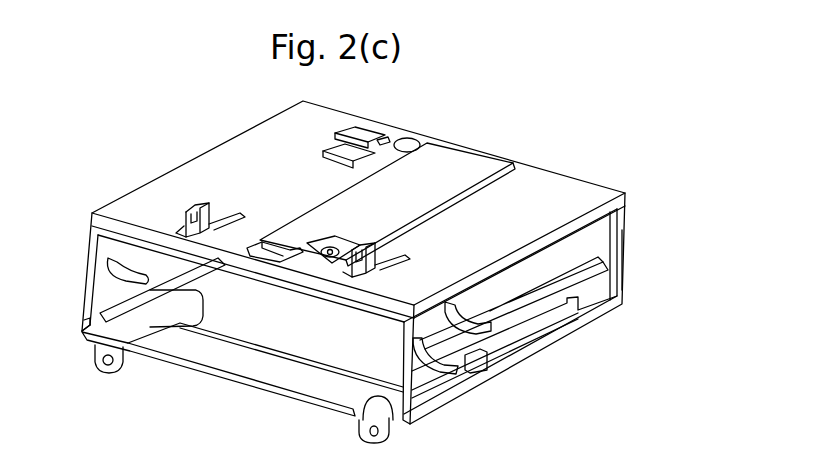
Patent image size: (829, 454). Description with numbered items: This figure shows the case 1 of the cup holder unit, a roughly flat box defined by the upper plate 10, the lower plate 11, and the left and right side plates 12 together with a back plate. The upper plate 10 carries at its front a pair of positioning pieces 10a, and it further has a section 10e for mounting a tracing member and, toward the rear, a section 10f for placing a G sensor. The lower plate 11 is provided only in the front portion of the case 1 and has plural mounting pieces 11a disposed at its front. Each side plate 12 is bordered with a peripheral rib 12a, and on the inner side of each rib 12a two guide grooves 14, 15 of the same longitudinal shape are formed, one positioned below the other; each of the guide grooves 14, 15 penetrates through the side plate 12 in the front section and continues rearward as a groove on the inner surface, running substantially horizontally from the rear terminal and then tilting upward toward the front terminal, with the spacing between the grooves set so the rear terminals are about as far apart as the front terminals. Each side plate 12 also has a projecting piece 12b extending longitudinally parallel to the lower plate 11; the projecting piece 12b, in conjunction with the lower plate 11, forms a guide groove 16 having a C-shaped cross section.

The case 1 is at (170, 140).
The upper plate 10 is at (272, 147).
The positioning piece 10a is at (190, 222).
The section for mounting a tracing member 10e is at (418, 141).
The section for placing a G sensor 10f is at (378, 139).
The lower plate 11 is at (220, 374).
The mounting piece 11a is at (127, 368).
The side plate 12 is at (603, 233).
The peripheral rib 12a is at (623, 258).
The projecting piece 12b is at (350, 413).
The guide groove 14 is at (125, 282).
The guide groove 15 is at (467, 327).
The guide groove 16 is at (80, 332).